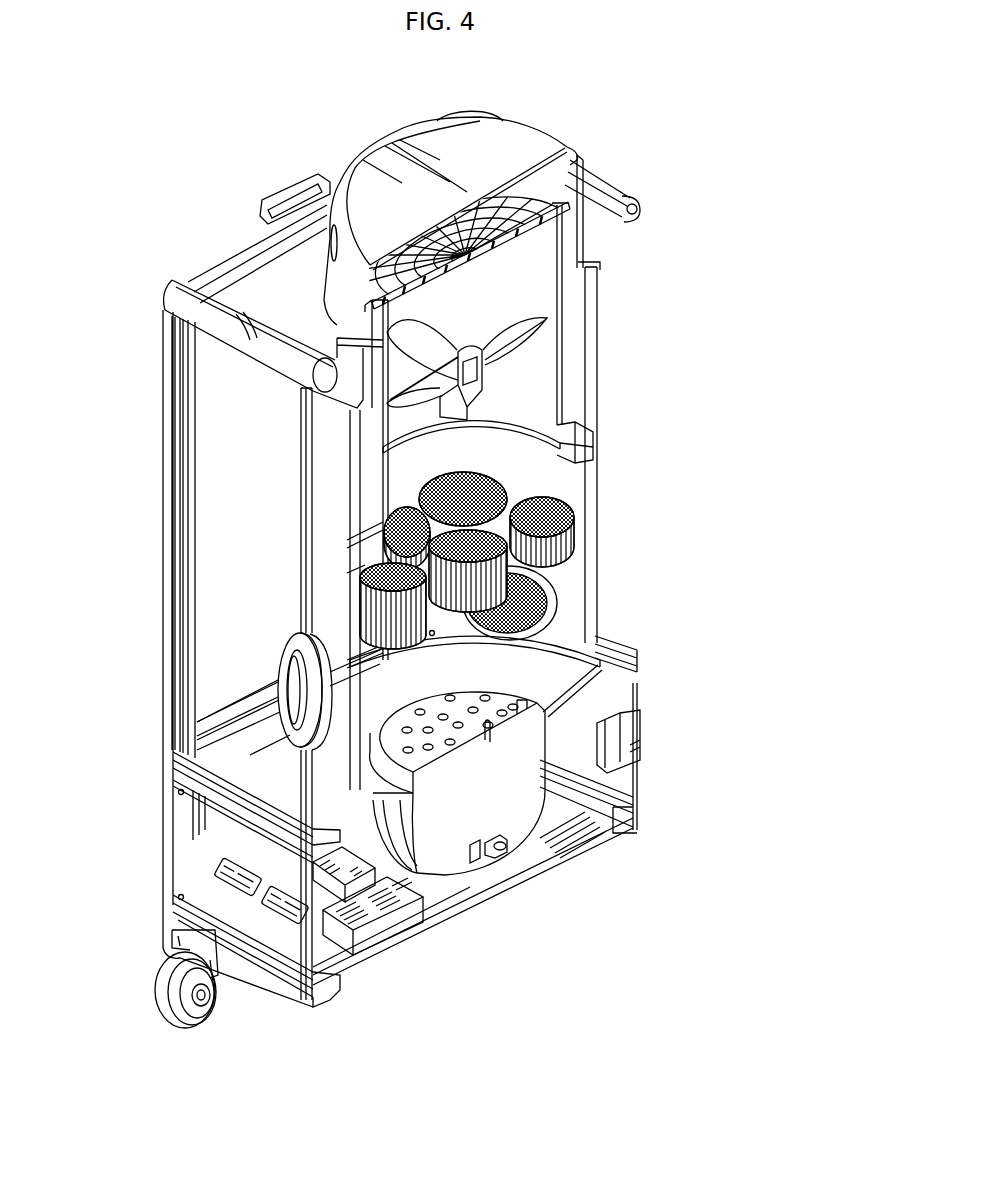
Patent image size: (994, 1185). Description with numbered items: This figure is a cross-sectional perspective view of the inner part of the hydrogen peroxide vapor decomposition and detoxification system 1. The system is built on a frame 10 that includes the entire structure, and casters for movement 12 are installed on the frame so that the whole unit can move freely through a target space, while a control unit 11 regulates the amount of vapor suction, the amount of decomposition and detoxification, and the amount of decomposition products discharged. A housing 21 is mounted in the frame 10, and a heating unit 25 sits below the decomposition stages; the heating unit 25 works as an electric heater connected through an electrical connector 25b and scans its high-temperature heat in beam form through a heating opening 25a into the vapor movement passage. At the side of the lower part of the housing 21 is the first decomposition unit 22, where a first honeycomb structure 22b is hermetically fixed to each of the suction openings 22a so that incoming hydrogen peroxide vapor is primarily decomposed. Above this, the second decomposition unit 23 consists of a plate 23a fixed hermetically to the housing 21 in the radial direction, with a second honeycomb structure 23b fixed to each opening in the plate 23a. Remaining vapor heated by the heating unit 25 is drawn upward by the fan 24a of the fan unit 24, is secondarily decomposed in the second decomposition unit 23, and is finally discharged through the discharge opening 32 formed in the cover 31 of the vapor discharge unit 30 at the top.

The hydrogen peroxide vapor decomposition and detoxification system 1 is at (664, 116).
The frame 10 is at (165, 600).
The control unit 11 is at (207, 878).
The casters for movement 12 is at (163, 982).
The housing 21 is at (302, 512).
The first decomposition unit 22 is at (760, 607).
The suction openings 22a is at (533, 562).
The first honeycomb structure 22b is at (547, 630).
The second decomposition unit 23 is at (717, 497).
The plate 23a is at (520, 527).
The second honeycomb structure 23b is at (497, 490).
The fan unit 24 is at (560, 355).
The fan 24a is at (560, 280).
The heating unit 25 is at (745, 765).
The heating opening 25a is at (533, 690).
The electrical connector 25b is at (503, 873).
The vapor discharge unit 30 is at (130, 153).
The cover 31 is at (367, 158).
The discharge opening 32 is at (327, 253).